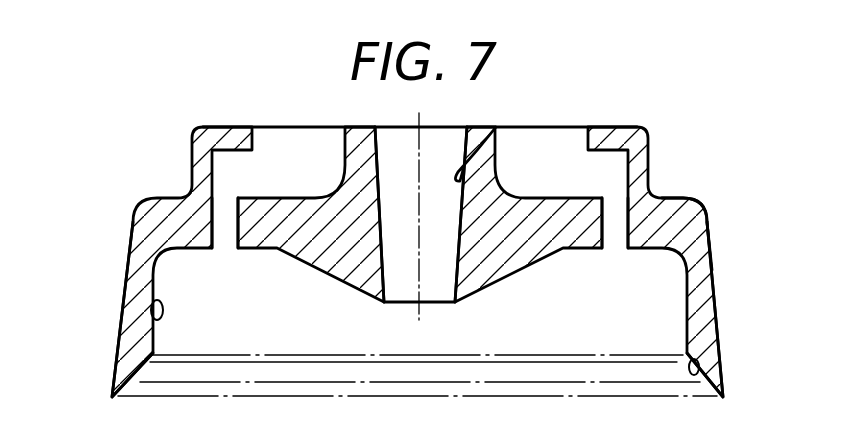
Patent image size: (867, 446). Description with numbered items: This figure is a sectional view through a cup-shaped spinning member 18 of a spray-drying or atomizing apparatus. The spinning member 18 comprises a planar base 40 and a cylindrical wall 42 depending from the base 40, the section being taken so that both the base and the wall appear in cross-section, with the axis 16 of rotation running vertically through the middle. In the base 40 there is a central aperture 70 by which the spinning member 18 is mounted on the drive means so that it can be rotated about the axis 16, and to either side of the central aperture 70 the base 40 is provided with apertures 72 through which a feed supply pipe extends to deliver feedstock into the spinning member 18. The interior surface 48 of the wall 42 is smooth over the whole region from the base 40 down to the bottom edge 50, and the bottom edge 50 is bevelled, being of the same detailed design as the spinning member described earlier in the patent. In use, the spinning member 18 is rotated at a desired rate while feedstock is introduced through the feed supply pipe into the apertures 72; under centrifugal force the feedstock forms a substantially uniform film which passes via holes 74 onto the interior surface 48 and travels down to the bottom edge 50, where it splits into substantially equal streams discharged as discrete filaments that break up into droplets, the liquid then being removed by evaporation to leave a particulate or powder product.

The axis 16 is at (418, 283).
The spinning member 18 is at (150, 155).
The planar base 40 is at (358, 127).
The cylindrical wall 42 is at (708, 240).
The interior surface 48 is at (152, 322).
The bottom edge 50 is at (700, 365).
The central aperture 70 is at (485, 136).
The apertures 72 is at (345, 150).
The holes 74 is at (225, 232).